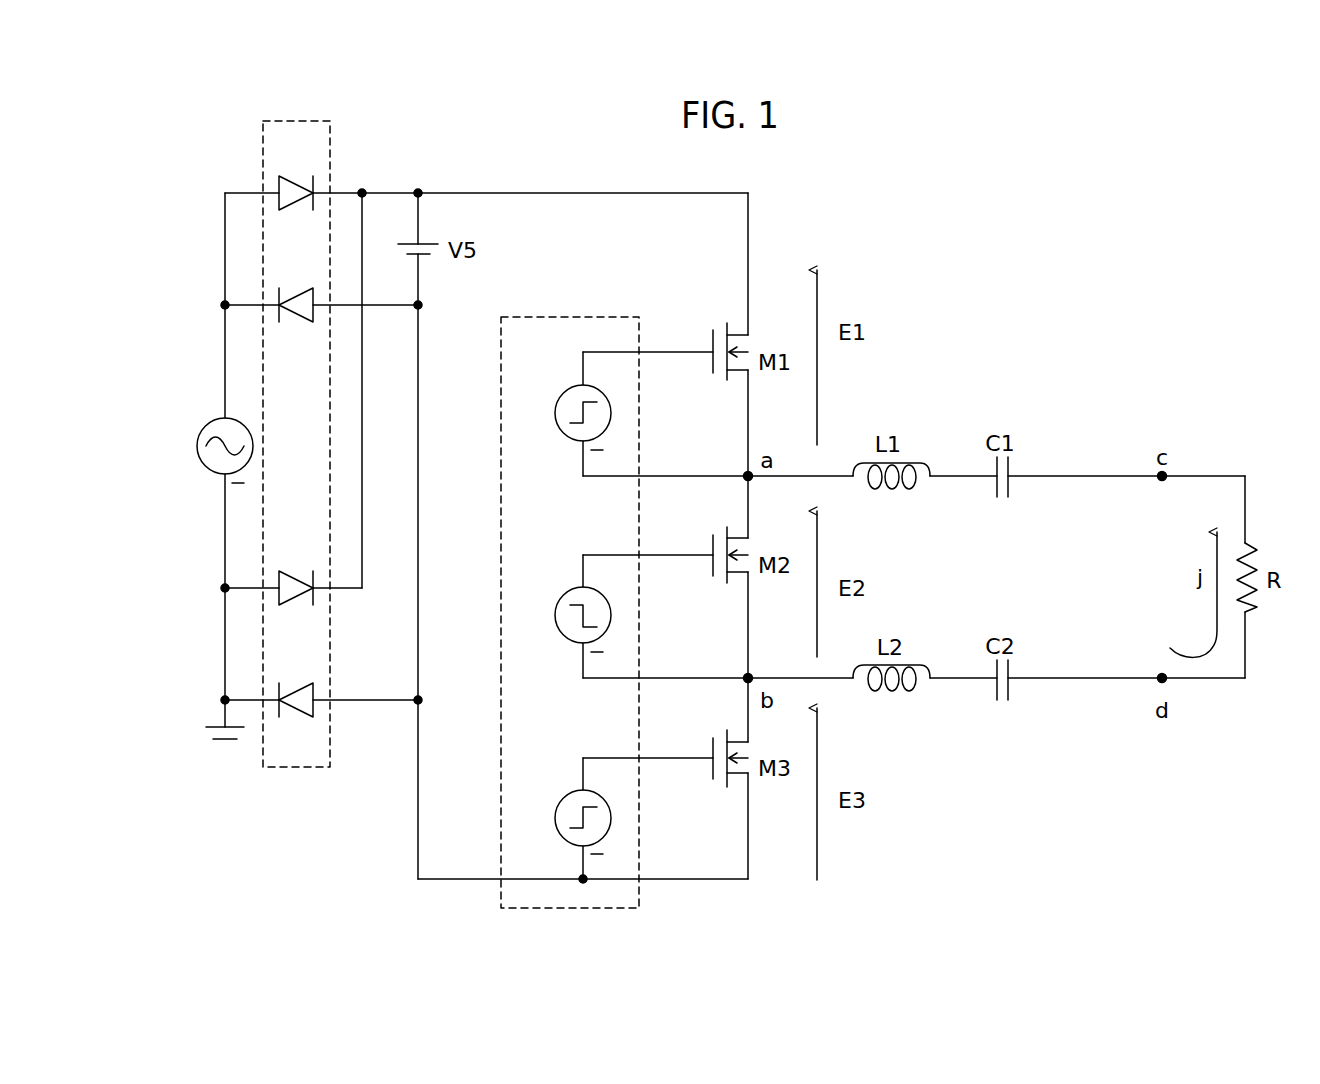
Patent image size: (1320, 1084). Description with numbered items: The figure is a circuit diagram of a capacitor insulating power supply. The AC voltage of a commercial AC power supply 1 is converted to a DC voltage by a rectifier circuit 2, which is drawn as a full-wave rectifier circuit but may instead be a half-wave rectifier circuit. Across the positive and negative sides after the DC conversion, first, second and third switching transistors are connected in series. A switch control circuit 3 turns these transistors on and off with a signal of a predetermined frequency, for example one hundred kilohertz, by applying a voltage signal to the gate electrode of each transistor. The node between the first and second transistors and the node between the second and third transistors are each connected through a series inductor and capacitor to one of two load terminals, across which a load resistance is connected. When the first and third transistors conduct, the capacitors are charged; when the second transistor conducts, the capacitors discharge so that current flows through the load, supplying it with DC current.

The commercial AC power supply 1 is at (197, 446).
The rectifier circuit 2 is at (330, 140).
The switch control circuit 3 is at (570, 315).